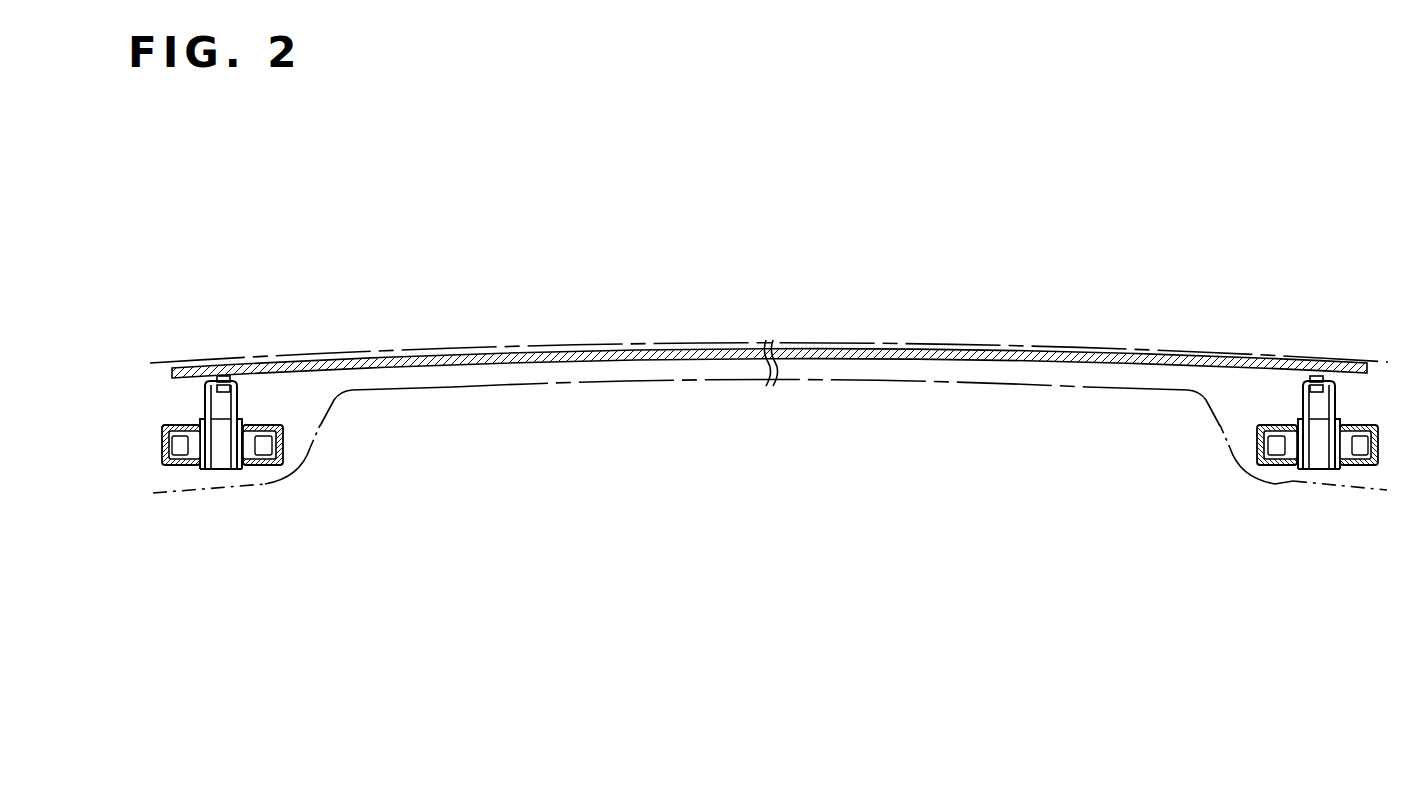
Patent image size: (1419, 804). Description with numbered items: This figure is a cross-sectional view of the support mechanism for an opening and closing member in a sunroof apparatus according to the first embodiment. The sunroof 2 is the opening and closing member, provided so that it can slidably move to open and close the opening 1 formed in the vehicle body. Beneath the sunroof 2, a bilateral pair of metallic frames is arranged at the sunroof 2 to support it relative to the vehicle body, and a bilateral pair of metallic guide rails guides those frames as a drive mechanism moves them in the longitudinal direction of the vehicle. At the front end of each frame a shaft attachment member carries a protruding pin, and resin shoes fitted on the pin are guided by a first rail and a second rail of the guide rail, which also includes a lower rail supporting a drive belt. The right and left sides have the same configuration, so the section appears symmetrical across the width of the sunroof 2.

The opening 1 is at (848, 258).
The sunroof 2 is at (676, 362).